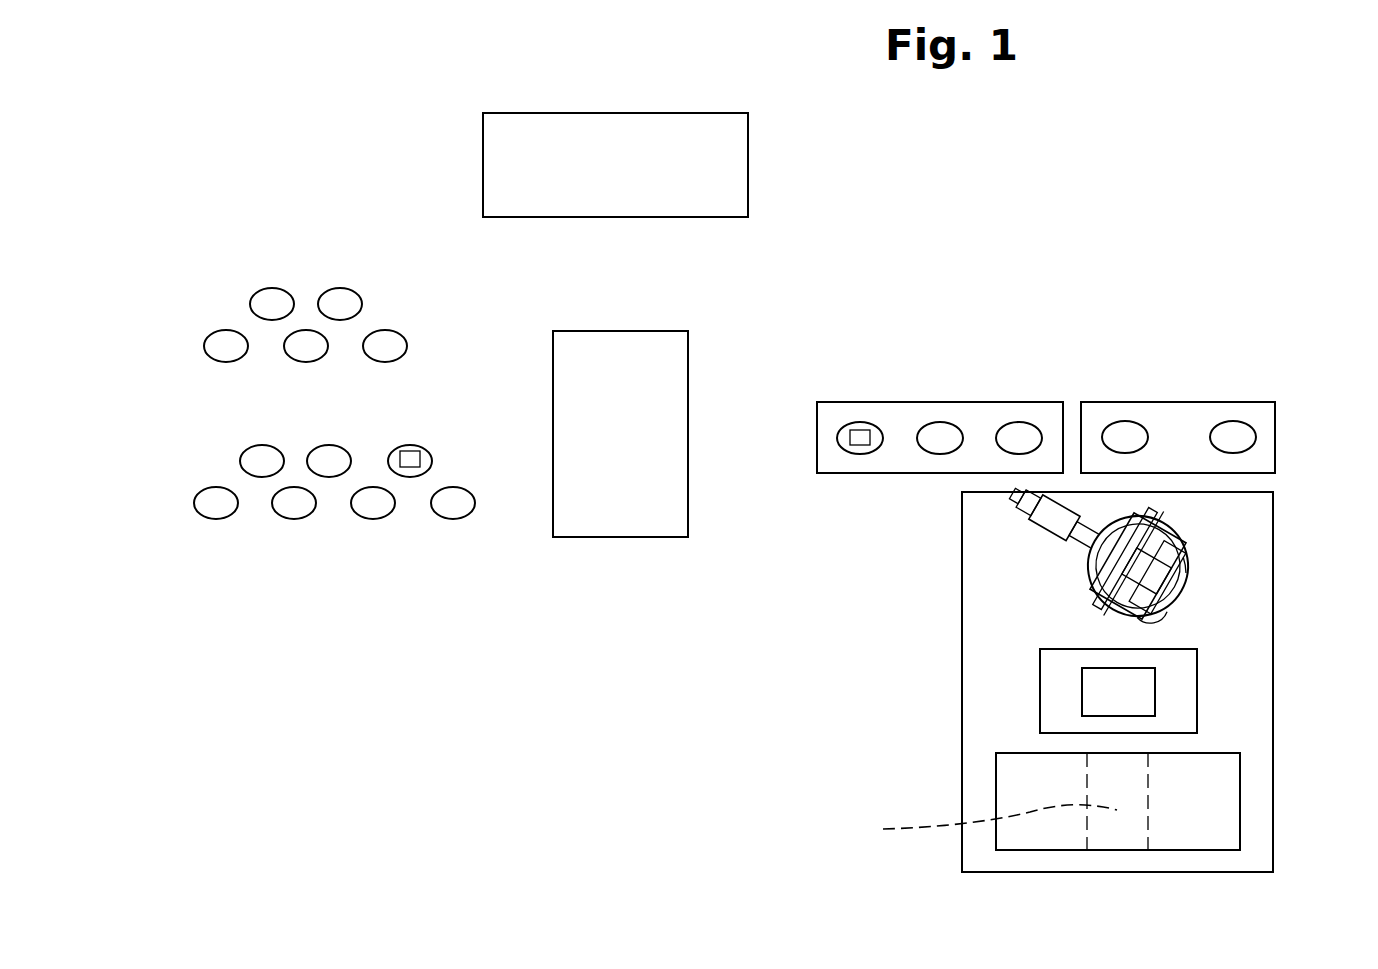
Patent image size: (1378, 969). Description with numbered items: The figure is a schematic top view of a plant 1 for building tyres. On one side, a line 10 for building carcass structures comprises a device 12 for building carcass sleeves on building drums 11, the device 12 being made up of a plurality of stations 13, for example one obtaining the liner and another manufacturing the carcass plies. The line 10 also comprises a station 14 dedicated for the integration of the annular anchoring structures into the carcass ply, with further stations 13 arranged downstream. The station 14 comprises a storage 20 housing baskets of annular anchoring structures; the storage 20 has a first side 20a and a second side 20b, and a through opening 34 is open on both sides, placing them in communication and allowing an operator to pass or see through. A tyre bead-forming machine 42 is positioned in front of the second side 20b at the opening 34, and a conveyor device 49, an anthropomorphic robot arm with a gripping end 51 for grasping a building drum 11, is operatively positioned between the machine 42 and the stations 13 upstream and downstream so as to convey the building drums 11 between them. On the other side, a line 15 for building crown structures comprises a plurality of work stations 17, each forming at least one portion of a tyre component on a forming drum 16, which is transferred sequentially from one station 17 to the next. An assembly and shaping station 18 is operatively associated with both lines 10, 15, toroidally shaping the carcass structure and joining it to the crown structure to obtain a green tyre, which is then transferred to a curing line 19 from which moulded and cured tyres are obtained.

The plant for building tyres 1 is at (590, 698).
The line for building carcass structures 10 is at (1030, 287).
The building drum 11 is at (860, 427).
The device for building carcass sleeves 12 is at (1182, 400).
The station 13 is at (1018, 437).
The station for the integration of the annular anchoring structures 14 is at (942, 768).
The line for building crown structures 15 is at (160, 266).
The forming drum 16 is at (412, 448).
The work station 17 is at (225, 342).
The assembly and shaping station 18 is at (640, 446).
The curing line 19 is at (624, 174).
The storage 20 is at (1252, 799).
The first side of the storage 20a is at (1200, 853).
The second side of the storage 20b is at (1028, 752).
The opening 34 is at (987, 825).
The tyre bead-forming machine 42 is at (1208, 685).
The conveyor device 49 is at (1198, 535).
The gripping end 51 is at (1020, 505).